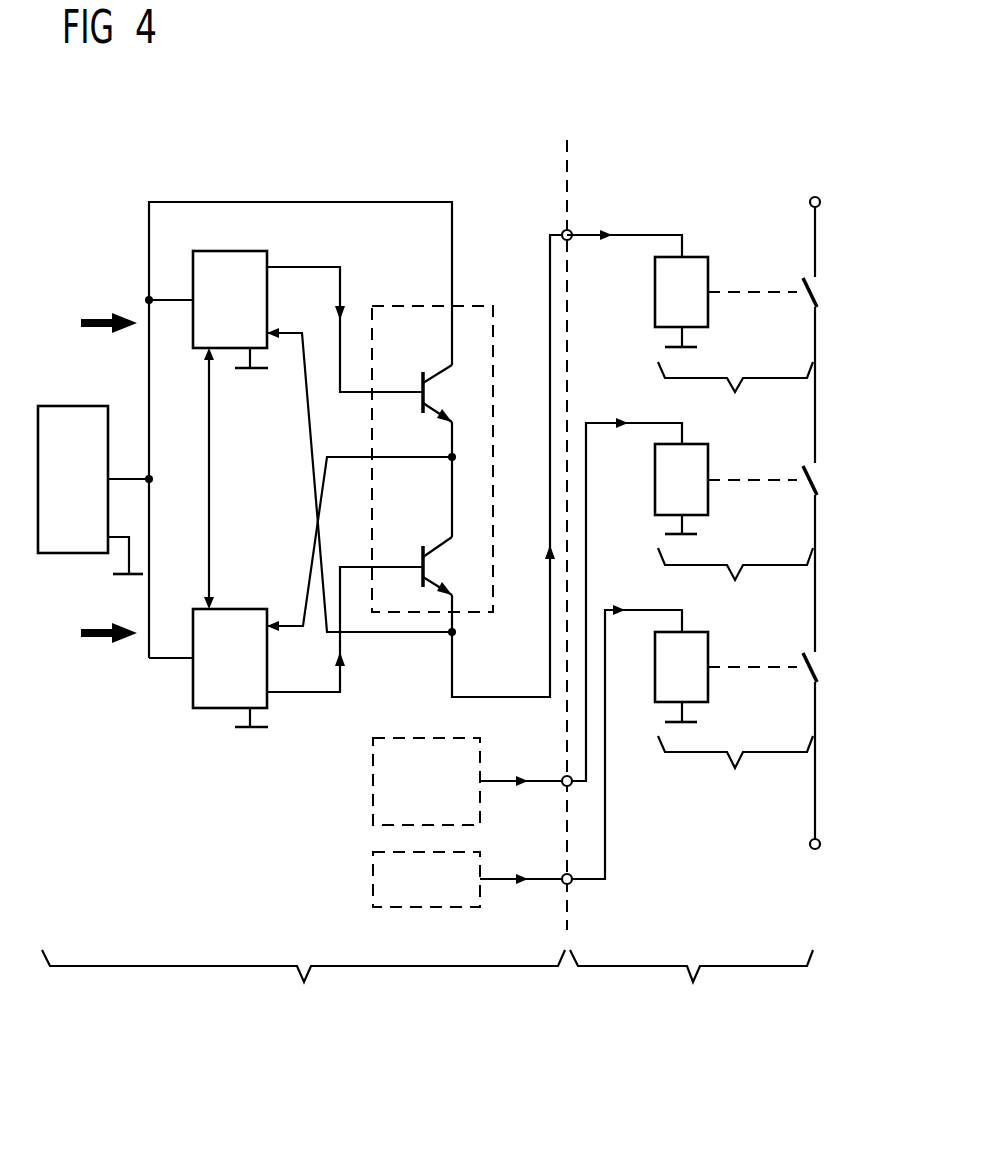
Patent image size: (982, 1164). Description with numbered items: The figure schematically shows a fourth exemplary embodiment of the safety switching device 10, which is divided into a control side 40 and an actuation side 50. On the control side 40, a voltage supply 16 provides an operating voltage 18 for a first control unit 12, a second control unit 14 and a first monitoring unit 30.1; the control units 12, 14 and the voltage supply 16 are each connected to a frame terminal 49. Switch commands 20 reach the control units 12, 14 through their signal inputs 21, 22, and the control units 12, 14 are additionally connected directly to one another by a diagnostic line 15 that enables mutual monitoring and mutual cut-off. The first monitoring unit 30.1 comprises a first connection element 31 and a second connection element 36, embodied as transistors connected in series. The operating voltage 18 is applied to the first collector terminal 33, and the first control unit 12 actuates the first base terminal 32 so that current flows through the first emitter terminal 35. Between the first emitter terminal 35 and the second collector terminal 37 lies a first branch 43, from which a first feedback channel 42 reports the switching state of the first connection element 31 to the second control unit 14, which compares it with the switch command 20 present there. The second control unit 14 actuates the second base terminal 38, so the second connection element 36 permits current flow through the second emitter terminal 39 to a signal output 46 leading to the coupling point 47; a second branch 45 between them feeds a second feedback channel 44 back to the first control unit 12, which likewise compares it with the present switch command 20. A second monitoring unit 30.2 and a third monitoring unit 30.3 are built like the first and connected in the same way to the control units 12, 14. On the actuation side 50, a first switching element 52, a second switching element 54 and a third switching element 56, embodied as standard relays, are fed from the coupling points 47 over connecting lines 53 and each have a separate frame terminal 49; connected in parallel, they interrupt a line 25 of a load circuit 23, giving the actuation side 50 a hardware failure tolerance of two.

The safety switching device 10 is at (427, 868).
The first control unit 12 is at (230, 309).
The second control unit 14 is at (230, 668).
The diagnostic line 15 is at (209, 480).
The voltage supply 16 is at (95, 490).
The operating voltage 18 is at (355, 202).
The switch command 20 is at (95, 318).
The input of first control unit 21 is at (193, 300).
The input of second control unit 22 is at (193, 658).
The load circuit 23 is at (270, 267).
The line 25 is at (817, 787).
The first monitoring unit 30.1 is at (470, 306).
The second monitoring unit 30.2 is at (373, 806).
The third monitoring unit 30.3 is at (373, 884).
The first connection element 31 is at (432, 410).
The first base terminal 32 is at (423, 386).
The first collector terminal 33 is at (455, 362).
The first emitter terminal 35 is at (455, 424).
The second connection element 36 is at (432, 600).
The second collector terminal 37 is at (455, 535).
The second base terminal 38 is at (423, 560).
The second emitter terminal 39 is at (455, 597).
The control side 40 is at (303, 984).
The first feedback channel 42 is at (312, 552).
The first branch 43 is at (456, 458).
The second feedback channel 44 is at (312, 452).
The second branch 45 is at (456, 633).
The signal output 46 is at (550, 528).
The coupling point 47 is at (563, 230).
The frame terminal 49 is at (113, 574).
The actuation side 50 is at (691, 984).
The first switching element 52 is at (692, 331).
The relay control line 53 is at (510, 700).
The second switching element 54 is at (736, 530).
The third switching element 56 is at (736, 717).